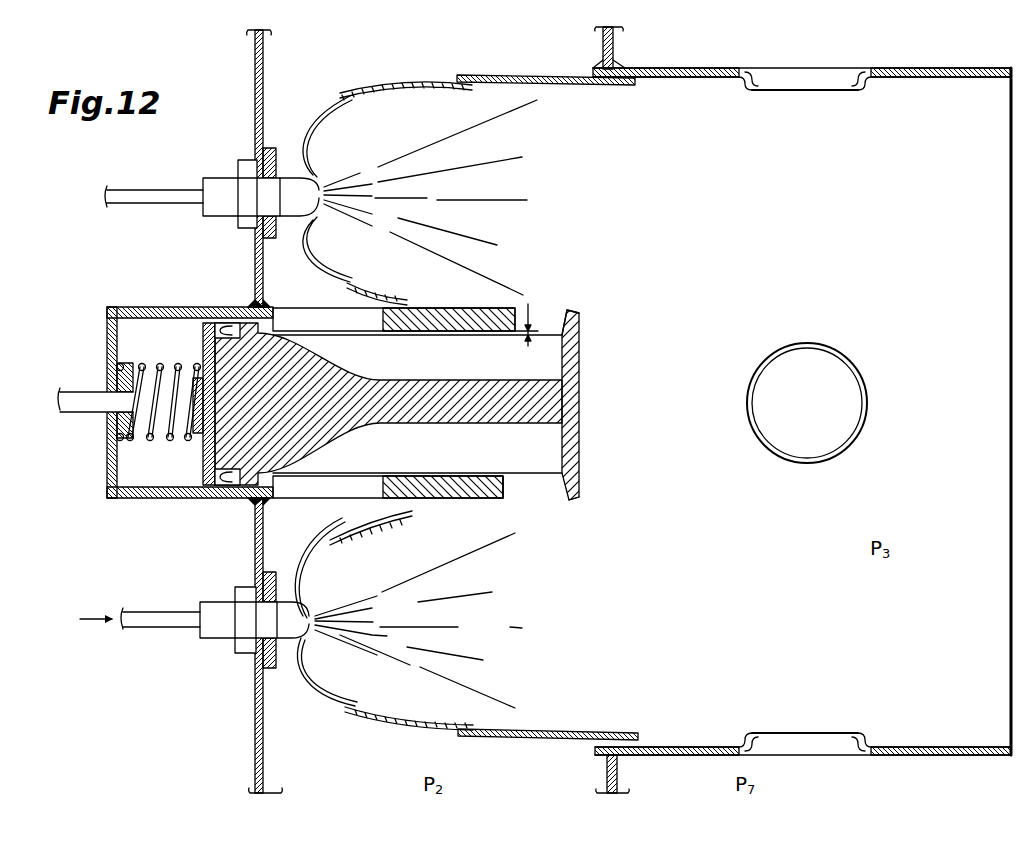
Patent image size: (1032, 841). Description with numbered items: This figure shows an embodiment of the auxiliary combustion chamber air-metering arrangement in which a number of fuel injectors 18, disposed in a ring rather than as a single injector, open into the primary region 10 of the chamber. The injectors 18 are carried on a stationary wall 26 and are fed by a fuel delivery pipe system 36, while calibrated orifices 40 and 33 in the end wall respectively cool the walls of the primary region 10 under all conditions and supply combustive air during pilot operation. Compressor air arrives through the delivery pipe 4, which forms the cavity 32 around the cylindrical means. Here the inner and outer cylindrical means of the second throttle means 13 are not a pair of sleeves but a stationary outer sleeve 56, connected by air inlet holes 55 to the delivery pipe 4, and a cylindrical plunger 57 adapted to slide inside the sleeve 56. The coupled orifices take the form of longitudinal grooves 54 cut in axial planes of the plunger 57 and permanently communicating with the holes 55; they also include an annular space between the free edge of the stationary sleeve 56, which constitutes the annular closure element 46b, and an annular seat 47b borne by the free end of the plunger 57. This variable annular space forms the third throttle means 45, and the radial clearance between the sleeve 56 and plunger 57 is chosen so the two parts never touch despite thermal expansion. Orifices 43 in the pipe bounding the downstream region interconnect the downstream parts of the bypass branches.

The delivery pipe 4 is at (547, 792).
The primary region 10 is at (606, 604).
The second throttle means 13 is at (578, 296).
The fuel injector 18 is at (327, 183).
The stationary wall 26 is at (255, 753).
The cavity 32 is at (303, 292).
The calibrated orifice 33 is at (307, 176).
The fuel delivery pipe system 36 is at (82, 413).
The calibrated orifice 40 is at (343, 100).
The orifice 43 is at (805, 87).
The third throttle means 45 is at (554, 297).
The annular closure element 46b is at (503, 488).
The annular seat 47b is at (566, 494).
The longitudinal groove 54 is at (545, 447).
The air inlet hole 55 is at (303, 490).
The stationary outer sleeve 56 is at (440, 310).
The cylindrical plunger 57 is at (510, 397).